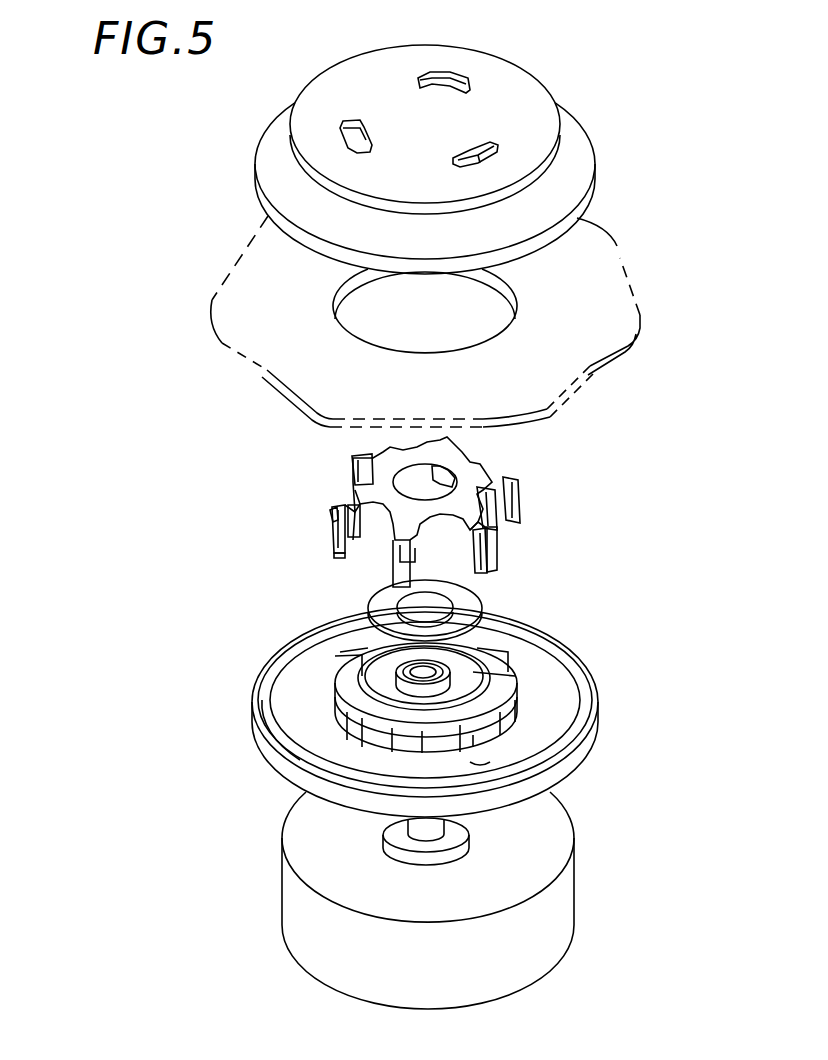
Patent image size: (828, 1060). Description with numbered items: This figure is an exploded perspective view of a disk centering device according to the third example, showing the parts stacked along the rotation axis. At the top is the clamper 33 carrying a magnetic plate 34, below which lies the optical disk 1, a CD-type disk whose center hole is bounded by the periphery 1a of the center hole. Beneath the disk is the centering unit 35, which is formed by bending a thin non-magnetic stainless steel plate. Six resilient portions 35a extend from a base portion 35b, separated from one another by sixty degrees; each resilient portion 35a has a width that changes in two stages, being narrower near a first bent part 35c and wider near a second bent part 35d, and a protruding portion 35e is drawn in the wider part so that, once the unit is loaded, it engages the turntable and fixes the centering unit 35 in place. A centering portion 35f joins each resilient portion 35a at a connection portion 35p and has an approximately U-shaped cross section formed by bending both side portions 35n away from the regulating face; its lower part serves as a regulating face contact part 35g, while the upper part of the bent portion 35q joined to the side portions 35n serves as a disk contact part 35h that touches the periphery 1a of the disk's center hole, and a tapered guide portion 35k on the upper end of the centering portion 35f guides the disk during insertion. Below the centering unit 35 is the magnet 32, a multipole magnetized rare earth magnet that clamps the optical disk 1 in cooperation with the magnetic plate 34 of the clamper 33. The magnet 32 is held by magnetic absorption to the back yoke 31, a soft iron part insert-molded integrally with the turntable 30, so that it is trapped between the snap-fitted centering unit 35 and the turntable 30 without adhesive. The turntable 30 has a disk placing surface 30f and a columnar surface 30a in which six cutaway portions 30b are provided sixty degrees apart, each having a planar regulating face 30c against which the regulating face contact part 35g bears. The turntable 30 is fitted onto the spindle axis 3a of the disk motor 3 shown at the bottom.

The optical disk 1 is at (262, 285).
The periphery of the center hole 1a is at (505, 288).
The disk motor 3 is at (317, 953).
The spindle axis 3a is at (410, 823).
The turntable 30 is at (403, 739).
The columnar surface 30a is at (478, 765).
The cutaway portions 30b is at (493, 718).
The regulating face 30c is at (443, 743).
The disk placing surface 30f is at (285, 746).
The back yoke 31 is at (432, 746).
The magnet 32 is at (463, 623).
The clamper 33 is at (282, 158).
The magnetic plate 34 is at (493, 140).
The centering unit 35 is at (395, 550).
The resilient portions 35a is at (338, 547).
The base portion 35b is at (358, 461).
The first bent part 35c is at (342, 557).
The second bent part 35d is at (358, 498).
The protruding portion 35e is at (337, 518).
The centering portion 35f is at (495, 547).
The regulating face contact part 35g is at (492, 560).
The disk contact part 35h is at (503, 528).
The guide portion 35k is at (510, 513).
The side portions 35n is at (490, 580).
The connection portion 35p is at (340, 550).
The bent portion 35q is at (492, 563).